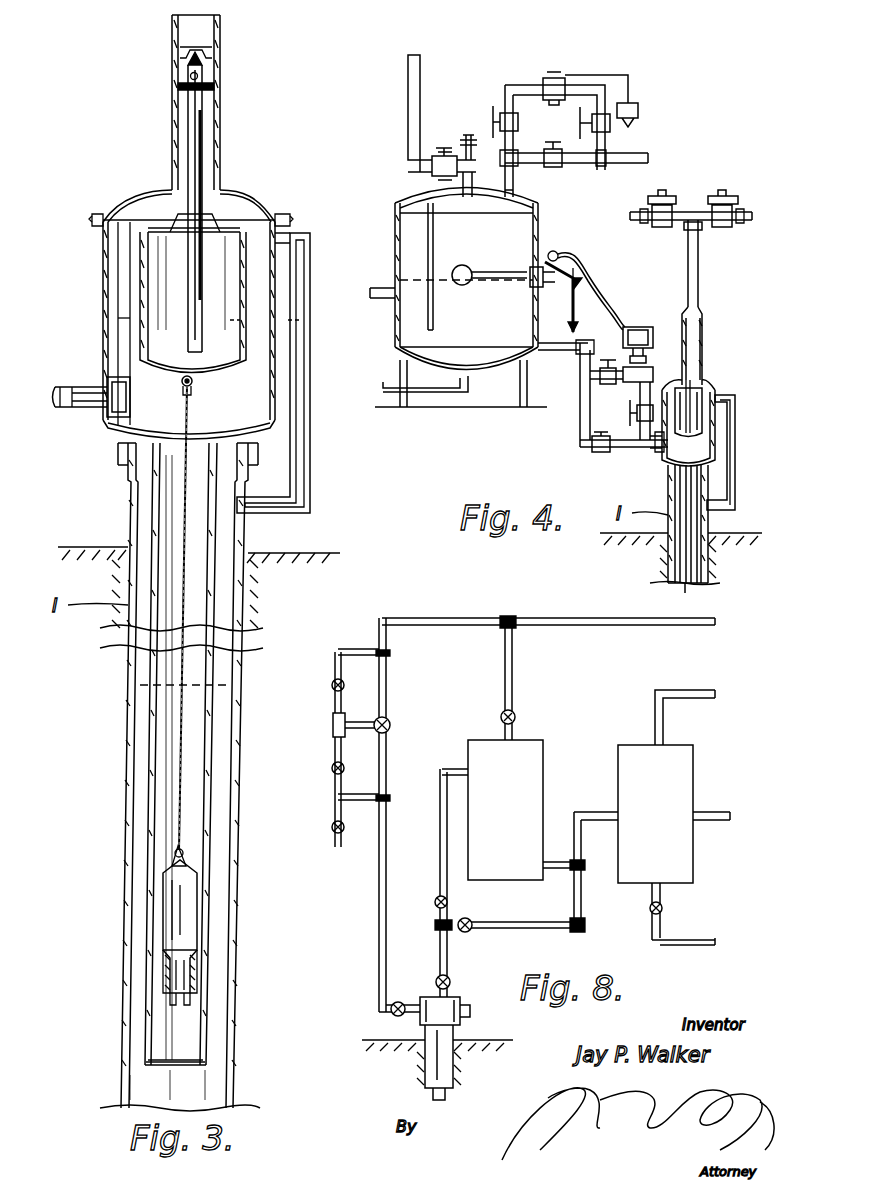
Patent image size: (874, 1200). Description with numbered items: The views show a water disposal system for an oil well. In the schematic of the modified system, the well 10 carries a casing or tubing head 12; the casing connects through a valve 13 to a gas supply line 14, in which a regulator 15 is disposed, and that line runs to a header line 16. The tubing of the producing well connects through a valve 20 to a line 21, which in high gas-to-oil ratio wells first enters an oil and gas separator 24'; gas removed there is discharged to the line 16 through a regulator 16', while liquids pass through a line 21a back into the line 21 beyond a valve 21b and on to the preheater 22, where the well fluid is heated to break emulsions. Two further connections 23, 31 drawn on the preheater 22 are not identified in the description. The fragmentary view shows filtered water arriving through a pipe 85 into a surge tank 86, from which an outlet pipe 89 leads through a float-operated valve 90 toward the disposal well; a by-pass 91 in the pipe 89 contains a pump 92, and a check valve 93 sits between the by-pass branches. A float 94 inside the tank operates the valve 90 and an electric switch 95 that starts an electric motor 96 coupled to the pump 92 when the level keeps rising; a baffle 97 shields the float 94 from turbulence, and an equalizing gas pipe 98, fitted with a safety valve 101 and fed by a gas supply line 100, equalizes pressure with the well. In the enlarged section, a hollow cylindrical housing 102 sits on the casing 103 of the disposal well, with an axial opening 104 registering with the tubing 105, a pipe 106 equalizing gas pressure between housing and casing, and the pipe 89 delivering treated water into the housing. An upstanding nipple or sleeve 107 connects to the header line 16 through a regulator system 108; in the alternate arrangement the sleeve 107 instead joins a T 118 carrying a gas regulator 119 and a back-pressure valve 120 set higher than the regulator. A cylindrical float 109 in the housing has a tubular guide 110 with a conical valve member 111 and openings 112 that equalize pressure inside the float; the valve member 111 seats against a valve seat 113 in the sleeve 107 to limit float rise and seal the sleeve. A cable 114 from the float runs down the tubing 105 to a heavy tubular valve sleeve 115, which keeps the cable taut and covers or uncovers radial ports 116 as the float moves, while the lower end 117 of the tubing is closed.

In FIG. 8, the well 10 is at (453, 1060).
In FIG. 8, the casing or tubing head 12 is at (460, 1020).
In FIG. 8, the valve 13 is at (412, 1002).
In FIG. 8, the gas supply line 14 is at (386, 870).
In FIG. 8, the regulator 15 is at (392, 723).
In FIG. 8, the header line 16 is at (548, 610).
In FIG. 8, the regulator 16' is at (534, 682).
In FIG. 8, the valve 20 is at (450, 982).
In FIG. 8, the line 21 is at (581, 912).
In FIG. 8, the line 21a is at (552, 864).
In FIG. 8, the valve 21b is at (470, 920).
In FIG. 8, the preheater 22 is at (634, 747).
In FIG. 8, the outlet pipe 23 is at (714, 815).
In FIG. 8, the oil and gas separator 24' is at (531, 810).
In FIG. 8, the vent pipe 31 is at (688, 690).
In FIG. 4, the pipe 85 is at (375, 294).
In FIG. 4, the surge tank 86 is at (538, 215).
In FIG. 3, the outlet pipe 89 is at (72, 390).
In FIG. 4, the outlet pipe 89 is at (566, 354).
In FIG. 4, the float-operated valve 90 is at (603, 346).
In FIG. 4, the by-pass 91 is at (630, 424).
In FIG. 4, the pump 92 is at (630, 380).
In FIG. 4, the check valve 93 is at (594, 450).
In FIG. 4, the float 94 is at (466, 268).
In FIG. 4, the electric switch 95 is at (556, 255).
In FIG. 4, the electric motor 96 is at (650, 328).
In FIG. 4, the baffle 97 is at (433, 244).
In FIG. 4, the equalizing gas pipe 98 is at (408, 98).
In FIG. 4, the gas supply line 100 is at (606, 166).
In FIG. 4, the safety valve 101 is at (468, 136).
In FIG. 3, the hollow cylindrical housing 102 is at (275, 384).
In FIG. 4, the hollow cylindrical housing 102 is at (715, 430).
In FIG. 3, the casing 103 is at (248, 536).
In FIG. 3, the axial opening 104 is at (202, 445).
In FIG. 3, the tubing 105 is at (217, 606).
In FIG. 3, the pipe 106 is at (310, 460).
In FIG. 4, the pipe 106 is at (735, 472).
In FIG. 3, the nipple or sleeve 107 is at (220, 128).
In FIG. 4, the nipple or sleeve 107 is at (702, 350).
In FIG. 4, the regulator system 108 is at (699, 232).
In FIG. 3, the cylindrical float 109 is at (246, 272).
In FIG. 4, the cylindrical float 109 is at (706, 384).
In FIG. 3, the finger or guide 110 is at (203, 168).
In FIG. 3, the conical valve member 111 is at (202, 60).
In FIG. 3, the openings 112 is at (198, 76).
In FIG. 3, the valve seat 113 is at (172, 62).
In FIG. 3, the cable or rod or wire line 114 is at (184, 504).
In FIG. 3, the tubular valve sleeve 115 is at (197, 948).
In FIG. 3, the radial ports 116 is at (205, 1000).
In FIG. 3, the lower end 117 is at (180, 1068).
In FIG. 4, the T 118 is at (695, 212).
In FIG. 4, the gas regulator 119 is at (662, 226).
In FIG. 4, the back-pressure valve 120 is at (724, 226).